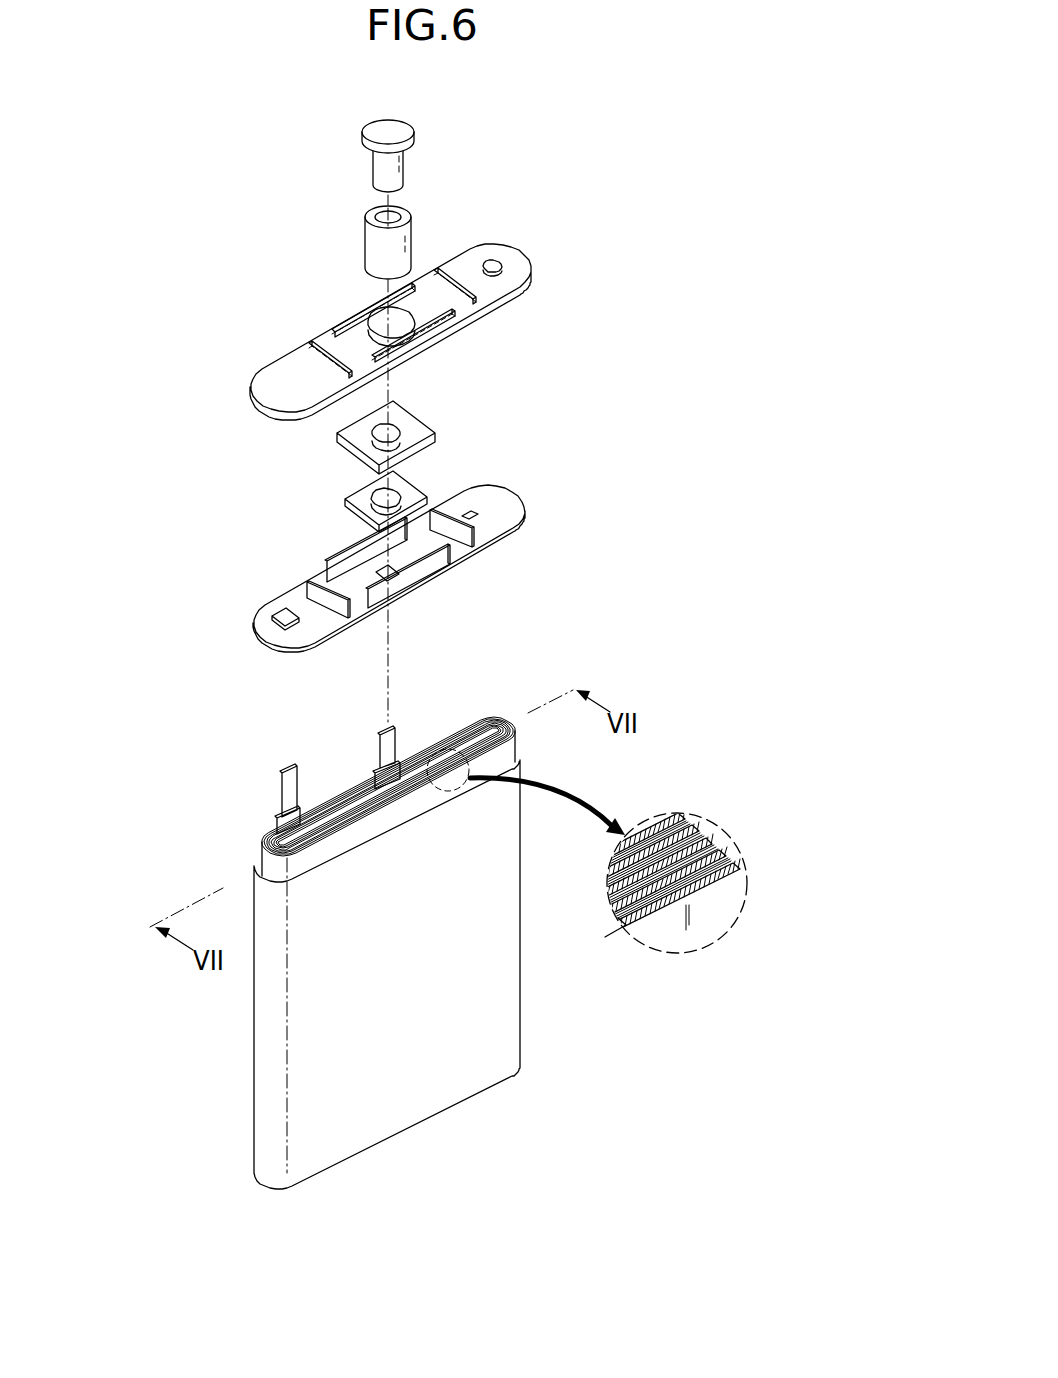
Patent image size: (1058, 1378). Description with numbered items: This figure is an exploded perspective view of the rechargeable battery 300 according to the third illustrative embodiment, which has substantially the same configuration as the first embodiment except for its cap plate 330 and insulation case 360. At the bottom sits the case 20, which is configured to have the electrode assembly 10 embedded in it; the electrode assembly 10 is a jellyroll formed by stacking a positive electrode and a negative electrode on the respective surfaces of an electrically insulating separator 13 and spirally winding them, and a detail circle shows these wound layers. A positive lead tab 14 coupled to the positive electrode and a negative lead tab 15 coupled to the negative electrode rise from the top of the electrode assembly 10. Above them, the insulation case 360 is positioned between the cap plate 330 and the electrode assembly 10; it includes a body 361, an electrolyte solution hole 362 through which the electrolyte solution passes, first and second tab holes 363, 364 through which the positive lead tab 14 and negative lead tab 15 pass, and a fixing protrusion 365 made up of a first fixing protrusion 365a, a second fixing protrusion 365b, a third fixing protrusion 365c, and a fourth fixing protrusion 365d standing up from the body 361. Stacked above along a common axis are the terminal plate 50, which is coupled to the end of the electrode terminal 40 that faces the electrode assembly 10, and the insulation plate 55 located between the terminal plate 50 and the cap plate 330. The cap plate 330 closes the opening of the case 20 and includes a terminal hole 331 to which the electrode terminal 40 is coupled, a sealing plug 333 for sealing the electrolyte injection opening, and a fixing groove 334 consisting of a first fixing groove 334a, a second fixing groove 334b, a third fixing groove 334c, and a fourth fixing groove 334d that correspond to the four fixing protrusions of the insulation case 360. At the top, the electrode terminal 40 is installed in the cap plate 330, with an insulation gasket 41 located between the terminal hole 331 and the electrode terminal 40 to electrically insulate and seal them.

The rechargeable battery 300 is at (642, 177).
The electrode assembly 10 is at (415, 753).
The separator 13 is at (620, 927).
The positive lead tab 14 is at (283, 786).
The negative lead tab 15 is at (398, 743).
The case 20 is at (373, 1105).
The electrode terminal 40 is at (400, 130).
The insulation gasket 41 is at (405, 215).
The terminal plate 50 is at (405, 490).
The insulation plate 55 is at (415, 412).
The cap plate 330 is at (404, 311).
The terminal hole 331 is at (407, 325).
The sealing plug 333 is at (490, 263).
The fixing groove 334 is at (716, 458).
The first fixing groove 334a is at (448, 333).
The second fixing groove 334b is at (367, 313).
The third fixing groove 334c is at (480, 298).
The fourth fixing groove 334d is at (323, 353).
The insulation case 360 is at (403, 553).
The body 361 is at (498, 532).
The electrolyte solution hole 362 is at (467, 507).
The first tab hole 363 is at (380, 572).
The second tab hole 364 is at (278, 607).
The fixing protrusion 365 is at (716, 627).
The first fixing protrusion 365a is at (422, 577).
The second fixing protrusion 365b is at (347, 565).
The third fixing protrusion 365c is at (433, 513).
The fourth fixing protrusion 365d is at (317, 578).